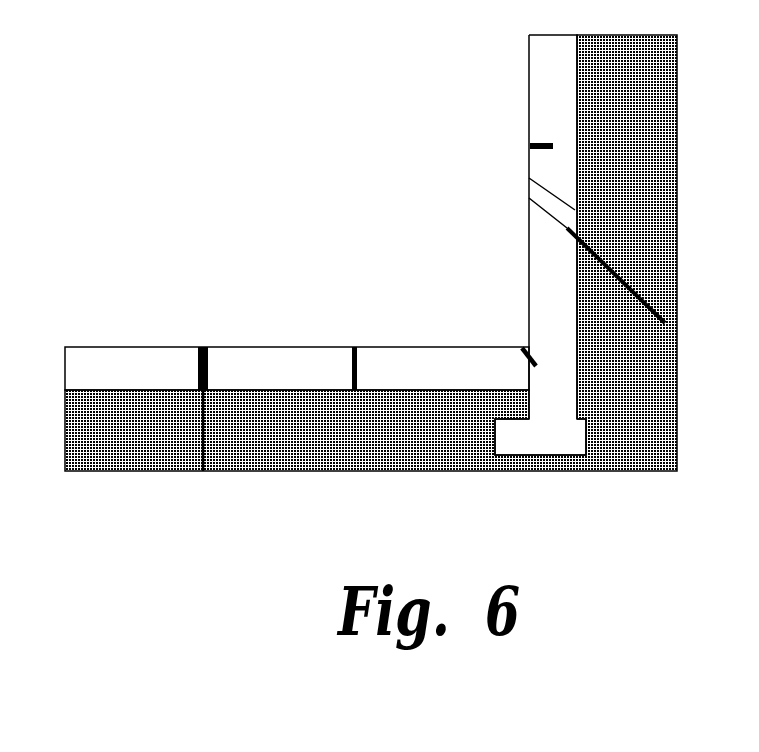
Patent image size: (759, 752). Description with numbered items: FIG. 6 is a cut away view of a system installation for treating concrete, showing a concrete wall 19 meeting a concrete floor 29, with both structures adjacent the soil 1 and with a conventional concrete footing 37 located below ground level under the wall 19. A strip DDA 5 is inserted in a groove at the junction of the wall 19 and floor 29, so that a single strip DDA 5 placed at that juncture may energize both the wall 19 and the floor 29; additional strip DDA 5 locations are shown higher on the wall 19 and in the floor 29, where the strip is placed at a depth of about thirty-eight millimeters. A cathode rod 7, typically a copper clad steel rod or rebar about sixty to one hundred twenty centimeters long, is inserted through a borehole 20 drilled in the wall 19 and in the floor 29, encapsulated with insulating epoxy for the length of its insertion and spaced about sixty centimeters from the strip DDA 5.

The soil 1 is at (361, 463).
The strip DDA 5 is at (522, 347).
The cathode rod 7 is at (203, 471).
The concrete wall 19 is at (571, 283).
The borehole 20 is at (202, 347).
The concrete floor 29 is at (135, 385).
The concrete footing 37 is at (501, 456).